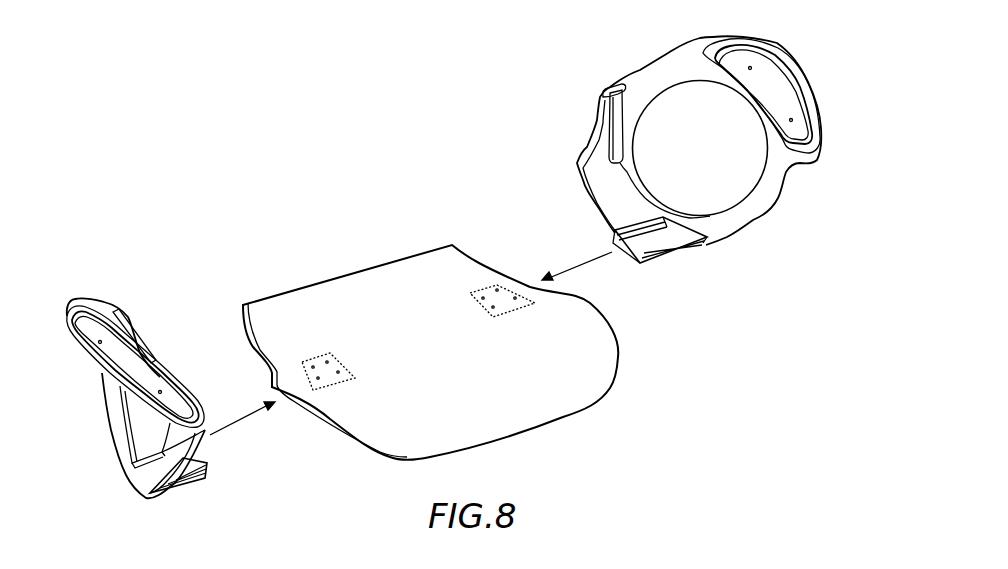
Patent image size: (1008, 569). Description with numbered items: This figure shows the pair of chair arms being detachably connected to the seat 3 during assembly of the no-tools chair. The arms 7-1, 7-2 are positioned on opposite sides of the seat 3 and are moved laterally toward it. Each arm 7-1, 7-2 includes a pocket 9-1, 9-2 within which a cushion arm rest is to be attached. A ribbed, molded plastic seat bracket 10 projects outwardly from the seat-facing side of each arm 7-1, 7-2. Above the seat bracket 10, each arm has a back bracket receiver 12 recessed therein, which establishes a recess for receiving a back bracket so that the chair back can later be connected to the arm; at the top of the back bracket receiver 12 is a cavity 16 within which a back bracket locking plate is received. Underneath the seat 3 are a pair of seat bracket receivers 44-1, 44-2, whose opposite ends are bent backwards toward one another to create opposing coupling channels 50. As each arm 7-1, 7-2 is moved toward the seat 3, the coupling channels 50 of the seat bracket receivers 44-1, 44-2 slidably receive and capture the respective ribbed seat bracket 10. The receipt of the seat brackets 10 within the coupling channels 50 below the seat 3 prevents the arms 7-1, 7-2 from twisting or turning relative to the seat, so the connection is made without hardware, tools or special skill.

The seat 3 is at (352, 288).
The arm 7-1 is at (120, 433).
The arm 7-2 is at (753, 212).
The pocket 9-1 is at (132, 367).
The pocket 9-2 is at (777, 92).
The seat bracket 10 is at (638, 243).
The back bracket receiver 12 is at (614, 123).
The cavity 16 is at (608, 93).
The seat bracket receiver 44-1 is at (342, 363).
The seat bracket receiver 44-2 is at (510, 288).
The coupling channels 50 is at (313, 390).